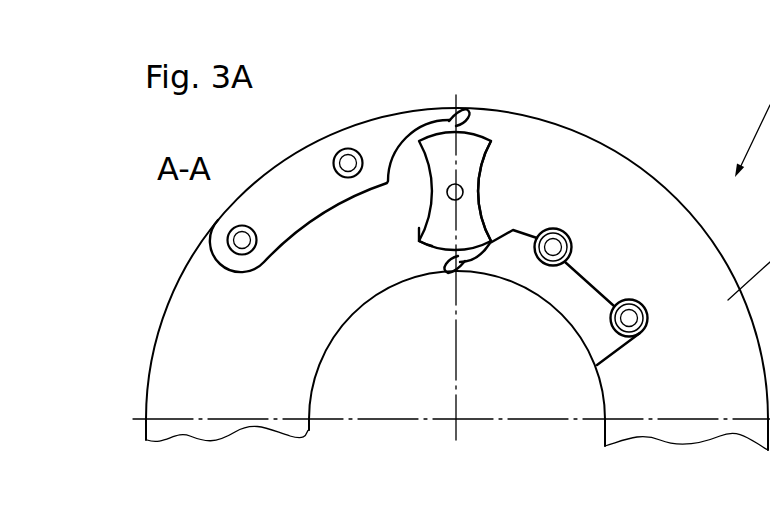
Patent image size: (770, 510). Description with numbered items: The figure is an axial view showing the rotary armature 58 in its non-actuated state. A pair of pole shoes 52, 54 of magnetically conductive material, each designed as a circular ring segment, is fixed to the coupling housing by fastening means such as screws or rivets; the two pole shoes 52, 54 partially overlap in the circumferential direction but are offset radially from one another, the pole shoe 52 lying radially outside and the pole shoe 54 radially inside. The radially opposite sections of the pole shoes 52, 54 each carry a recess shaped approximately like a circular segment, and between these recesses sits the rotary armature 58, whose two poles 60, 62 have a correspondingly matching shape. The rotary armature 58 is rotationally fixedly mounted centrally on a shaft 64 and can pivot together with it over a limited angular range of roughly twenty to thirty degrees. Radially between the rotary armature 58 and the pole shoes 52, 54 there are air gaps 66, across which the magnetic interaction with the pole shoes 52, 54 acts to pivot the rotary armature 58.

The pole shoe 52 is at (285, 185).
The pole shoe 54 is at (515, 270).
The rotary armature 58 is at (488, 192).
The pole 60 is at (473, 150).
The pole 62 is at (430, 236).
The shaft 64 is at (447, 194).
The air gap 66 is at (468, 118).